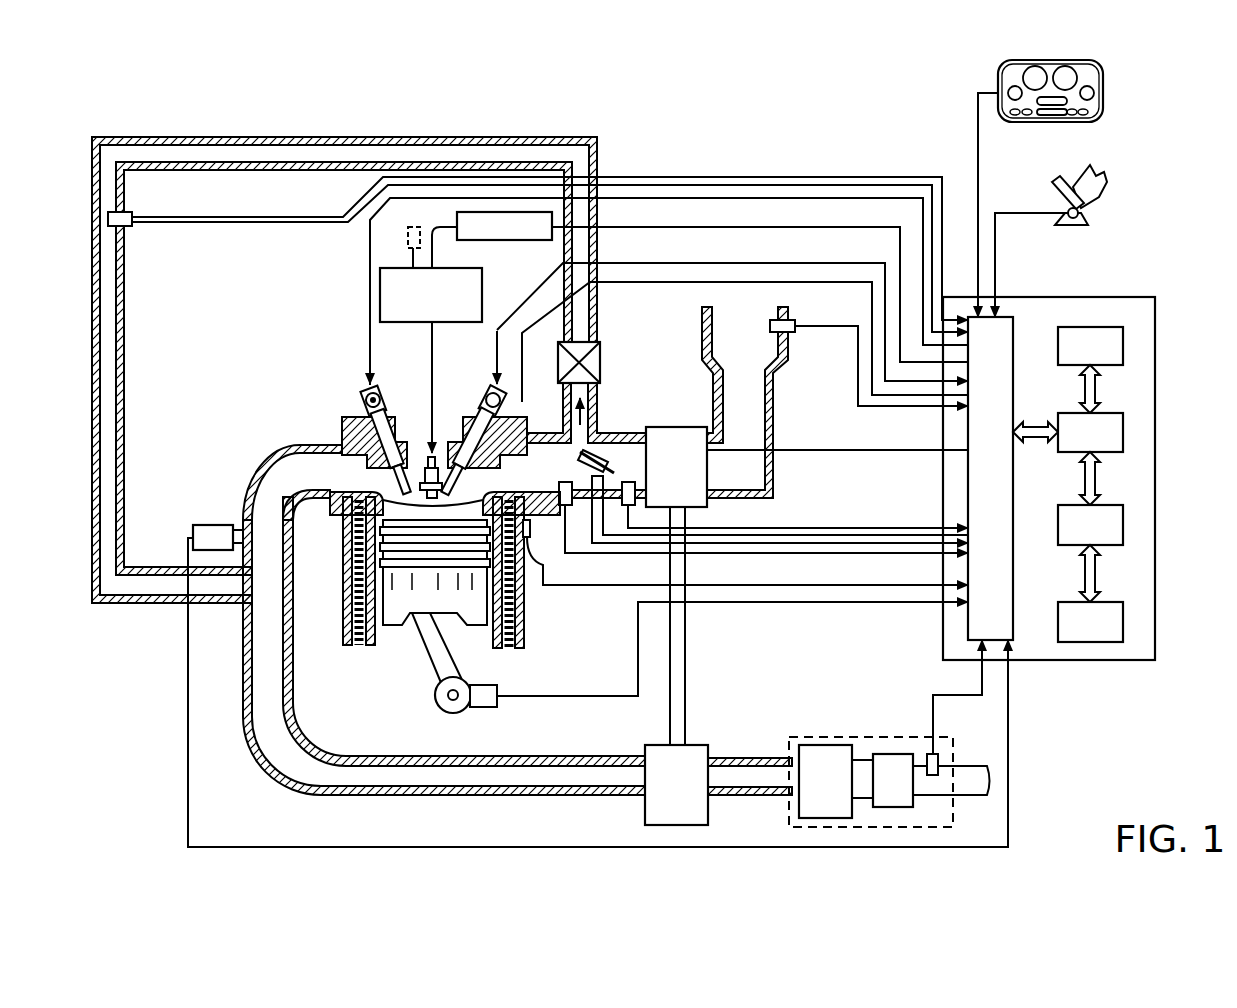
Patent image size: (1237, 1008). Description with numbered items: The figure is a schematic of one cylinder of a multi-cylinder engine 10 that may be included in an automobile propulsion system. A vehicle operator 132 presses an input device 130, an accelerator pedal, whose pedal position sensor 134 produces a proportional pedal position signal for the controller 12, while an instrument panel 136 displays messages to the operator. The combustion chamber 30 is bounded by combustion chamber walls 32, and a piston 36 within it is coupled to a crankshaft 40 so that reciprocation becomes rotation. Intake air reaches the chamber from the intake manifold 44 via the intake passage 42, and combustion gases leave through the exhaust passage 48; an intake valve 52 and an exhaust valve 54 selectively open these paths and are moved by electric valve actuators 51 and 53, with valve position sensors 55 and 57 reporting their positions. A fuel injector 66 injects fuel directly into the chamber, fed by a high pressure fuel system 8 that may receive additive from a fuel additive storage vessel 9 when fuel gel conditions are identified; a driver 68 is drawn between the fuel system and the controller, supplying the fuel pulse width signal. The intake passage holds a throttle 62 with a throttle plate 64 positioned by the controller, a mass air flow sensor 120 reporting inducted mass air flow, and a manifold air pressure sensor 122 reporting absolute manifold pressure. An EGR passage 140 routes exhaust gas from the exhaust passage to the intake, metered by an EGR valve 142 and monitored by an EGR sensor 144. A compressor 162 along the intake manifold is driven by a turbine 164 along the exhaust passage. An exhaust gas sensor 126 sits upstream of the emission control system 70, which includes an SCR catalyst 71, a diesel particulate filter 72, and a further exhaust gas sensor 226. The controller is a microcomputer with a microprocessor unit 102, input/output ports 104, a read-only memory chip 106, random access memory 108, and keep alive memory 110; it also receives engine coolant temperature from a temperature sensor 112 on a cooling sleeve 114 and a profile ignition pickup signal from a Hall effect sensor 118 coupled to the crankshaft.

The high pressure fuel system 8 is at (482, 280).
The fuel additive storage vessel 9 is at (408, 239).
The engine 10 is at (283, 372).
The controller 12 is at (1150, 297).
The combustion chamber 30 is at (355, 598).
The combustion chamber walls 32 is at (378, 648).
The piston 36 is at (418, 612).
The crankshaft 40 is at (441, 711).
The intake passage 42 is at (745, 402).
The intake manifold 44 is at (599, 471).
The exhaust passage 48 is at (444, 620).
The electric valve actuator 51 is at (485, 383).
The intake valve 52 is at (462, 492).
The electric valve actuator 53 is at (385, 383).
The exhaust valve 54 is at (390, 480).
The valve position sensor 55 is at (510, 409).
The valve position sensor 57 is at (358, 398).
The throttle 62 is at (598, 455).
The throttle plate 64 is at (612, 462).
The fuel injector 66 is at (436, 455).
The driver 68 is at (530, 241).
The emission control system 70 is at (873, 737).
The SCR catalyst 71 is at (836, 781).
The diesel particulate filter 72 is at (931, 780).
The microprocessor unit 102 is at (1123, 430).
The input/output ports 104 is at (1013, 330).
The read-only memory chip 106 is at (1123, 345).
The random access memory 108 is at (1123, 525).
The keep alive memory 110 is at (1123, 620).
The temperature sensor 112 is at (544, 552).
The cooling sleeve 114 is at (512, 602).
The Hall effect sensor 118 is at (490, 710).
The mass air flow sensor 120 is at (790, 320).
The manifold air pressure sensor 122 is at (562, 486).
The exhaust gas sensor 126 is at (193, 530).
The input device 130 is at (1058, 187).
The vehicle operator 132 is at (1105, 184).
The pedal position sensor 134 is at (1085, 215).
The instrument panel 136 is at (1103, 80).
The EGR passage 140 is at (355, 138).
The EGR valve 142 is at (602, 366).
The EGR sensor 144 is at (132, 226).
The compressor 162 is at (807, 586).
The turbine 164 is at (718, 785).
The exhaust gas sensor 226 is at (940, 760).